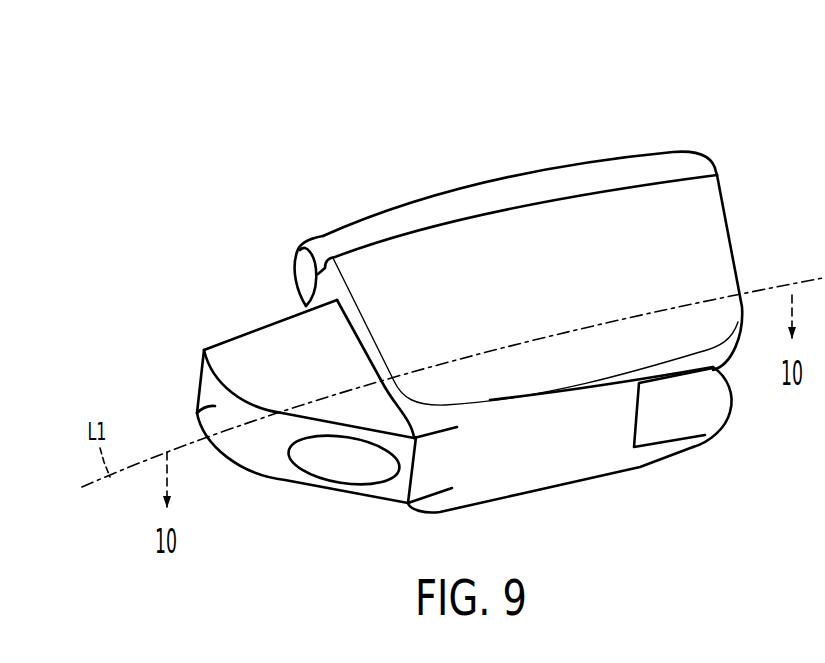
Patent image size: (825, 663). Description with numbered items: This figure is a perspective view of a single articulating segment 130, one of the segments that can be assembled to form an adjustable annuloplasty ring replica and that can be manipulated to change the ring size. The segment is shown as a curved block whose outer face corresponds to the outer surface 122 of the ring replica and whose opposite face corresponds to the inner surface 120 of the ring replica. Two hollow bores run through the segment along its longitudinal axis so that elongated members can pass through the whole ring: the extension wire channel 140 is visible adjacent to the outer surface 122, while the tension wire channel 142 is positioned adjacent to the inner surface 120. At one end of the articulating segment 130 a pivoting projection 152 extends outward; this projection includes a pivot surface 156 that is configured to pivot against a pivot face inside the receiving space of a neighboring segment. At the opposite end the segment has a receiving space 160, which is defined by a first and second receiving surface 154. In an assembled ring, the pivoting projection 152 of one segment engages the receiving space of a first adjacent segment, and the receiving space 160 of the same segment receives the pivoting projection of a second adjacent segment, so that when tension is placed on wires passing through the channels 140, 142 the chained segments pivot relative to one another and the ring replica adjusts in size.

The articulating segment 130 is at (717, 114).
The outer surface 122 is at (468, 183).
The extension wire channel 140 is at (295, 271).
The pivoting projection 152 is at (229, 353).
The pivot surface 156 is at (196, 414).
The tension wire channel 142 is at (348, 456).
The inner surface 120 is at (520, 453).
The receiving surface 154 is at (716, 369).
The receiving space 160 is at (700, 398).